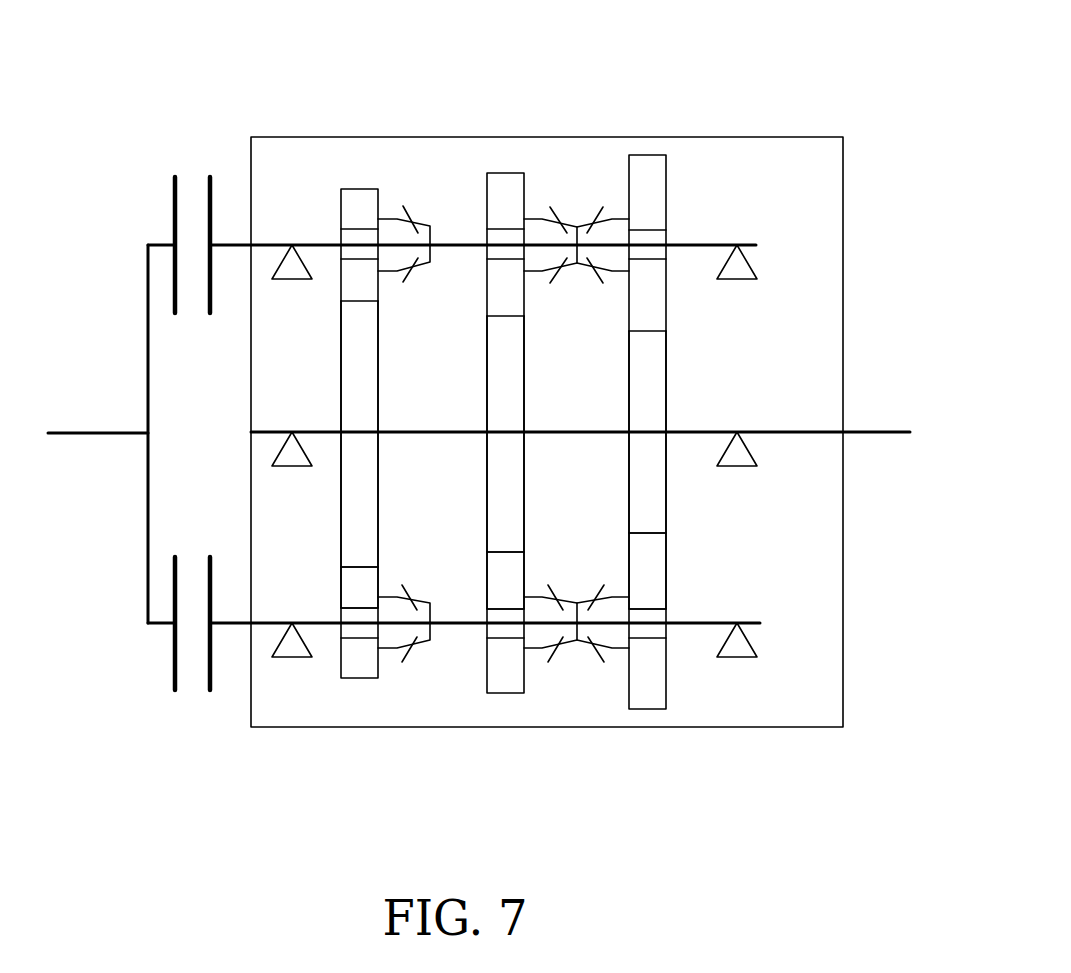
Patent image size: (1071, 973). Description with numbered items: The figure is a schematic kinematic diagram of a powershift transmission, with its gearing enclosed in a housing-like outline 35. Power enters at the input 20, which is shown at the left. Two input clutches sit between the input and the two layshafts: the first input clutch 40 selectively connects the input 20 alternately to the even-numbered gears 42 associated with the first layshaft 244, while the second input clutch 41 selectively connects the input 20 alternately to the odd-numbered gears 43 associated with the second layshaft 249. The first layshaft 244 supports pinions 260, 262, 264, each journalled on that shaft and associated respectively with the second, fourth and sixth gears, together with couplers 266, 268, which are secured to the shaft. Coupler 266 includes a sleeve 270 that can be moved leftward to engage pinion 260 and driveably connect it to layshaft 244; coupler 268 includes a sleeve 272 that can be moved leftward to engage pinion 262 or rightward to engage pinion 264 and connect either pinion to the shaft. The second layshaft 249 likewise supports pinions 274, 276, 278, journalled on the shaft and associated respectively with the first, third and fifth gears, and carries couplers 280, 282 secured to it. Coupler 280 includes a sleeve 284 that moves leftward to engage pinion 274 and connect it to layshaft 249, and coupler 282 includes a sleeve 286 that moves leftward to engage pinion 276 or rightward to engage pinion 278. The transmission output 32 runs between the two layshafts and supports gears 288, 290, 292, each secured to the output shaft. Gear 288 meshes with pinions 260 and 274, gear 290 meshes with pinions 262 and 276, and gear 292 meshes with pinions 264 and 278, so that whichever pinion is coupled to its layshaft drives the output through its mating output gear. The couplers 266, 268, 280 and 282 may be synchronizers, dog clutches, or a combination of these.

The input 20 is at (112, 433).
The transmission output 32 is at (877, 432).
The transmission housing 35 is at (547, 137).
The first input clutch 40 is at (173, 645).
The second input clutch 41 is at (172, 217).
The even-numbered gears 42 is at (412, 697).
The odd-numbered gears 43 is at (412, 168).
The first layshaft 244 is at (232, 627).
The second layshaft 249 is at (230, 243).
The pinion 260 is at (340, 590).
The pinion 262 is at (483, 575).
The pinion 264 is at (668, 567).
The coupler 266 is at (432, 628).
The coupler 268 is at (580, 637).
The sleeve 270 is at (415, 587).
The sleeve 272 is at (570, 587).
The pinion 274 is at (355, 189).
The pinion 276 is at (508, 173).
The pinion 278 is at (648, 155).
The coupler 280 is at (435, 232).
The coupler 282 is at (583, 258).
The sleeve 284 is at (418, 273).
The sleeve 286 is at (565, 208).
The gear 288 is at (380, 482).
The gear 290 is at (525, 478).
The gear 292 is at (668, 500).